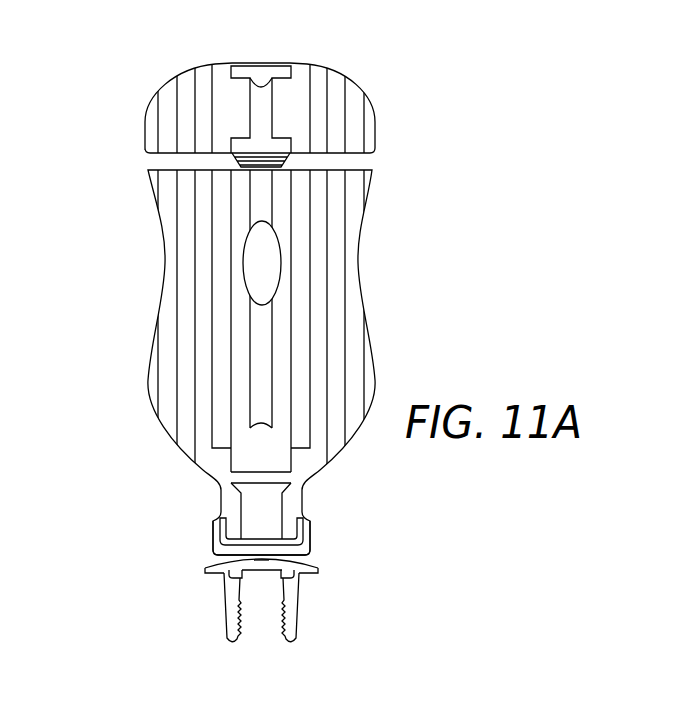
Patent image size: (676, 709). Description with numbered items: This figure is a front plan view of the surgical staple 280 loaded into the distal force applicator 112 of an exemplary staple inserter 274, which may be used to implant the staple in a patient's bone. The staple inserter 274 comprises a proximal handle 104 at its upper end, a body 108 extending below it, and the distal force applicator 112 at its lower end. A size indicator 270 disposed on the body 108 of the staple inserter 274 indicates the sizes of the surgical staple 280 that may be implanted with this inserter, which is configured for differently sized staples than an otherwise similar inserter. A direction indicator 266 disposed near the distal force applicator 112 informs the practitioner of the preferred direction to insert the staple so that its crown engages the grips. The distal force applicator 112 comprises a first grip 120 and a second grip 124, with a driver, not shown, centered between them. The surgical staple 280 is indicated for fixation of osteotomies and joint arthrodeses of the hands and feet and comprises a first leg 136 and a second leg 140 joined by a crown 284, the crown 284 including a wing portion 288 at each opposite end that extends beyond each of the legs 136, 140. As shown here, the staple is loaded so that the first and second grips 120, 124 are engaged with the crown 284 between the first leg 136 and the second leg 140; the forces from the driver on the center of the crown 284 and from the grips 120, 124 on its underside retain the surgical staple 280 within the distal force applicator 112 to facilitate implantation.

The staple inserter 274 is at (203, 46).
The proximal handle 104 is at (344, 78).
The body 108 is at (358, 263).
The size indicator 270 is at (255, 262).
The distal force applicator 112 is at (336, 549).
The direction indicator 266 is at (216, 527).
The surgical staple 280 is at (182, 626).
The wing portion 288 is at (207, 567).
The first grip 120 is at (237, 576).
The second grip 124 is at (289, 578).
The first leg 136 is at (230, 633).
The second leg 140 is at (293, 636).
The crown 284 is at (256, 560).